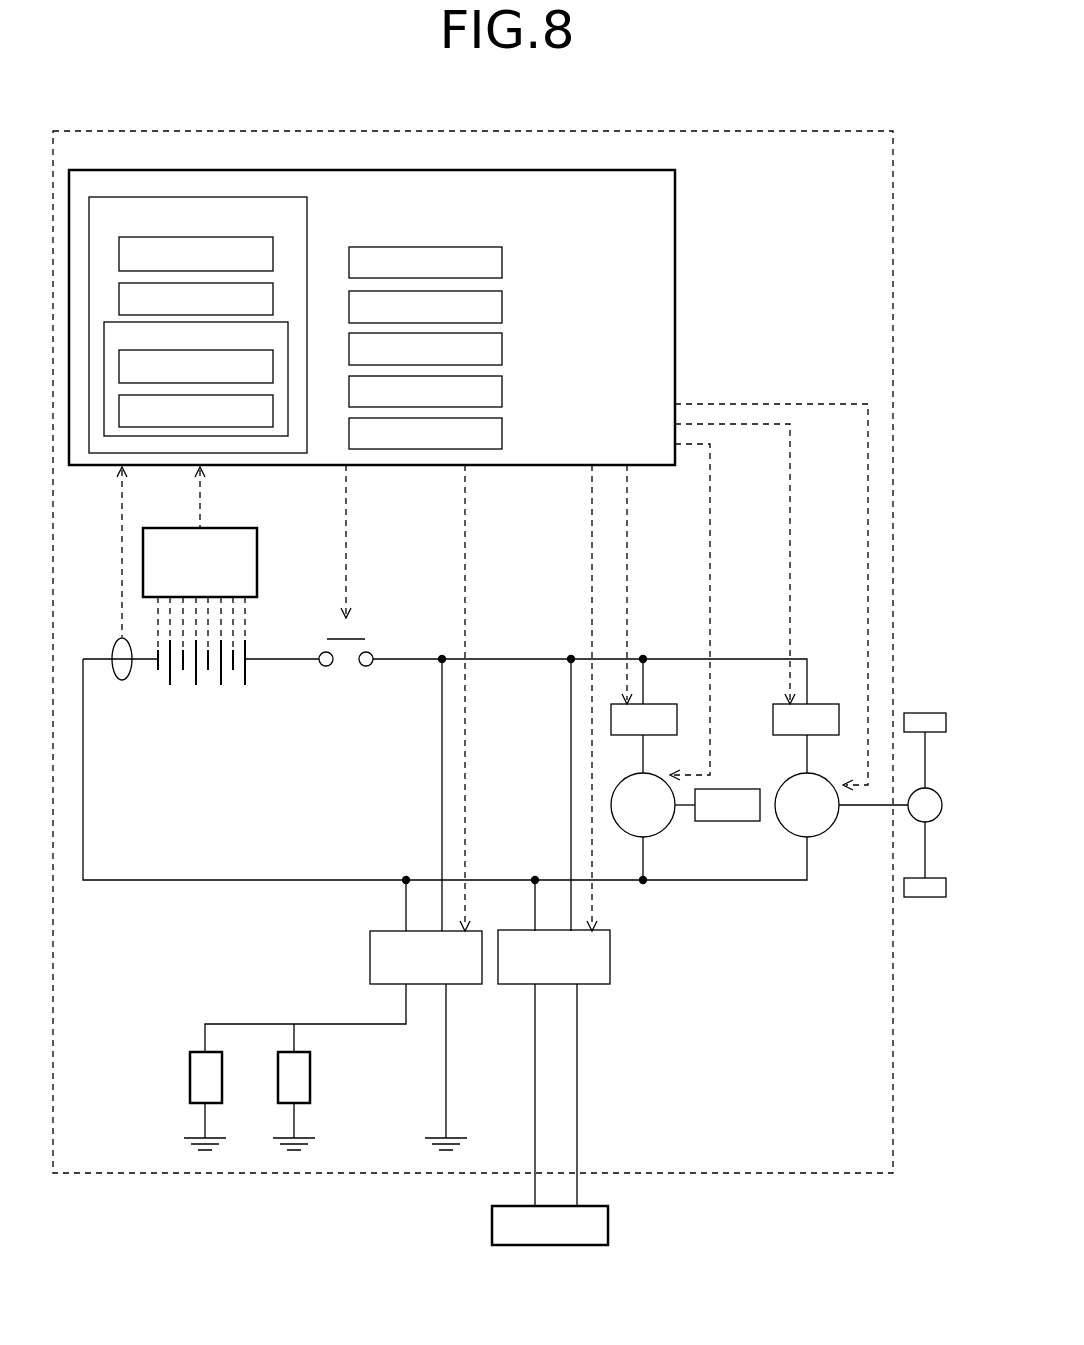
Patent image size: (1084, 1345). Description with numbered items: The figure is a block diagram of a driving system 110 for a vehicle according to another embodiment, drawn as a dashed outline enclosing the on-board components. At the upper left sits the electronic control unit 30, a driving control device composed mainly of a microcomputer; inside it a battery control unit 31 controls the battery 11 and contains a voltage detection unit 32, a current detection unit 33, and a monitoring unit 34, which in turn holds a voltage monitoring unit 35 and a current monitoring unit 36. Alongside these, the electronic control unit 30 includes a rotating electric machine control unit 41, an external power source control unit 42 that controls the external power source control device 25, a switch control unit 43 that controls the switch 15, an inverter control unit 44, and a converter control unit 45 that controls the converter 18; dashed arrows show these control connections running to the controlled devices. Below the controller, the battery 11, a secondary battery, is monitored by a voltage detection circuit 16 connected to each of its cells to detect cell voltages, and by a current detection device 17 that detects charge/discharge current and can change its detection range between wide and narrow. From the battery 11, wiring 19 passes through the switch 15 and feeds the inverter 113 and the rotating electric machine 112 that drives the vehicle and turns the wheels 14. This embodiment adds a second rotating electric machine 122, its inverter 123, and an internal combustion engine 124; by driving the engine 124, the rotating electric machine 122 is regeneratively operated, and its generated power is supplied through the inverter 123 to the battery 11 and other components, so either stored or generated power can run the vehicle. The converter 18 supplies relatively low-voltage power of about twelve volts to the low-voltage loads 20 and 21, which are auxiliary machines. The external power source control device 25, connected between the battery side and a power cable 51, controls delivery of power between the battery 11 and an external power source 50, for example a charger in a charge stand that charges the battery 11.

The driving system 110 is at (762, 131).
The electronic control unit 30 is at (678, 237).
The battery control unit 31 is at (309, 200).
The voltage detection unit 32 is at (274, 245).
The current detection unit 33 is at (274, 290).
The monitoring unit 34 is at (290, 336).
The voltage monitoring unit 35 is at (274, 372).
The current monitoring unit 36 is at (274, 415).
The rotating electric machine control unit 41 is at (504, 262).
The external power source control unit 42 is at (504, 306).
The switch control unit 43 is at (504, 349).
The inverter control unit 44 is at (504, 393).
The converter control unit 45 is at (504, 434).
The voltage detection circuit 16 is at (259, 540).
The current detection device 17 is at (110, 648).
The battery 11 is at (208, 690).
The switch 15 is at (344, 672).
The wiring 19 is at (406, 654).
The inverter 123 is at (664, 704).
The inverter 113 is at (827, 704).
The rotating electric machine 122 is at (664, 832).
The rotating electric machine 112 is at (828, 832).
The internal combustion engine 124 is at (733, 789).
The wheels 14 is at (925, 772).
The converter 18 is at (369, 956).
The low-voltage load 20 is at (189, 1080).
The low-voltage load 21 is at (312, 1082).
The external power source control device 25 is at (612, 958).
The power cable 51 is at (580, 1192).
The external power source 50 is at (610, 1235).